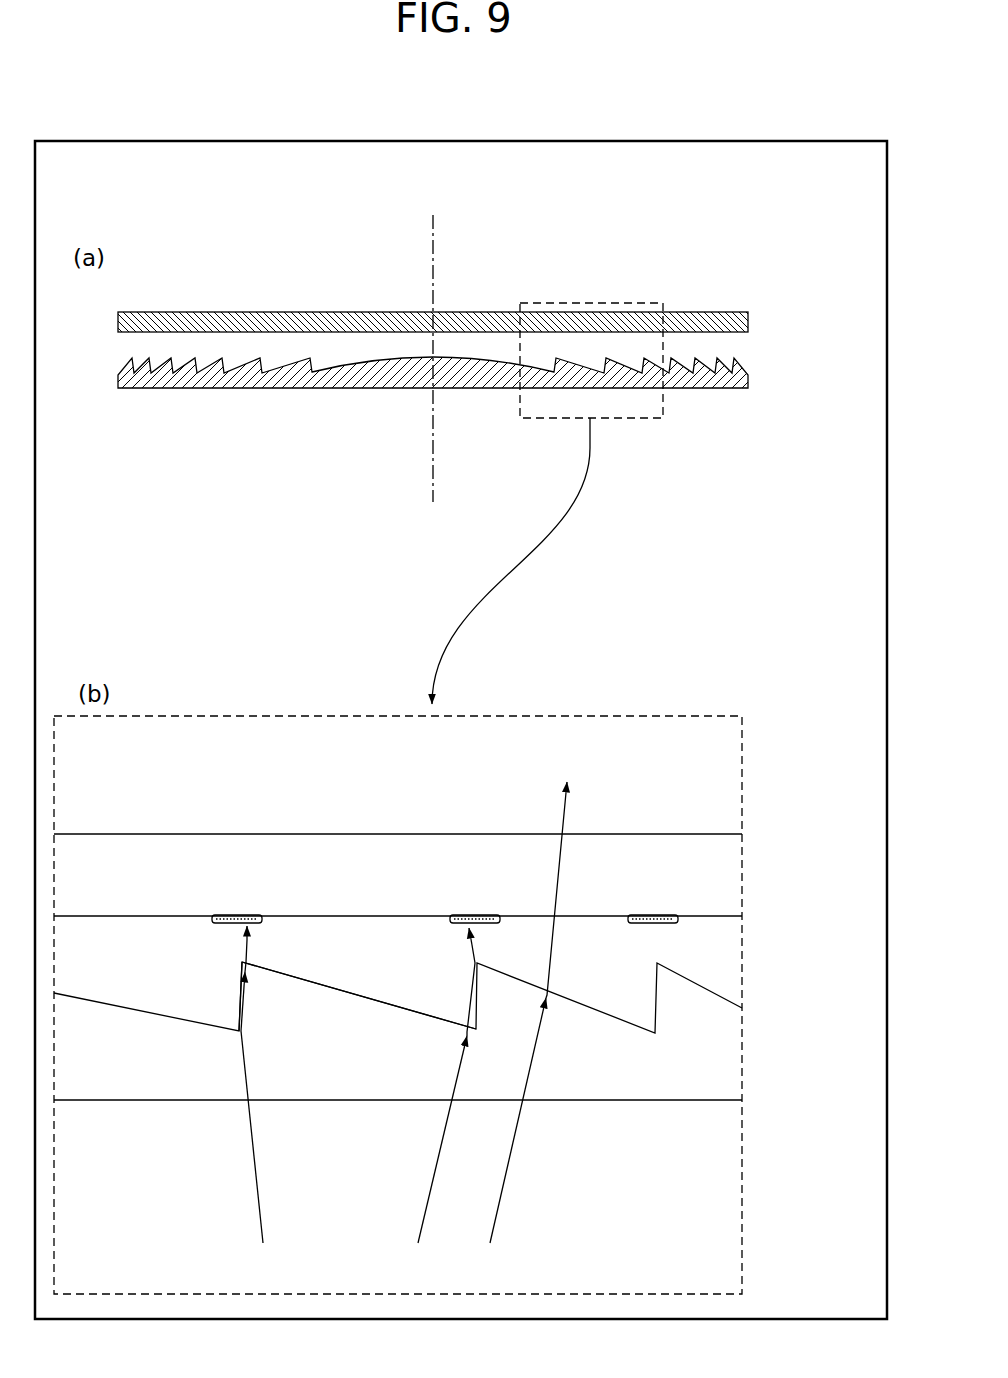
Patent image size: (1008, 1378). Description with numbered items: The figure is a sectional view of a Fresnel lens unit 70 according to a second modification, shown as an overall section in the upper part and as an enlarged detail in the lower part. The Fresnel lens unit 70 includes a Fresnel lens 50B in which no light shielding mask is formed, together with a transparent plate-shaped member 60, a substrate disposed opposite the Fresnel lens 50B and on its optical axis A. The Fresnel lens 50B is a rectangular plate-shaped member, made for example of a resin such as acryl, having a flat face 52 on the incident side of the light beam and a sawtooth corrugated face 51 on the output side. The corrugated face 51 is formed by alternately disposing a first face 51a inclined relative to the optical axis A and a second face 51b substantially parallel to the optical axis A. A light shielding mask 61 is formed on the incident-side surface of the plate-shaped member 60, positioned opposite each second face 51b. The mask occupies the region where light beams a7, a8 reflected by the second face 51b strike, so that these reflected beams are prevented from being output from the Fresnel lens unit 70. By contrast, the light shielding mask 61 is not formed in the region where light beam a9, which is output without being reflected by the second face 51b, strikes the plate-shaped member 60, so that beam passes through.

The Fresnel lens unit 70 is at (678, 256).
The plate-shaped member 60 is at (748, 322).
The Fresnel lens 50B is at (748, 378).
The corrugated face 51 is at (151, 933).
The first face 51a is at (305, 975).
The second face 51b is at (235, 1000).
The flat face 52 is at (368, 1104).
The light shielding mask 61 is at (257, 923).
The optical axis A is at (433, 373).
The light beam a7 is at (260, 1104).
The light beam a8 is at (438, 1105).
The light beam a9 is at (519, 1032).